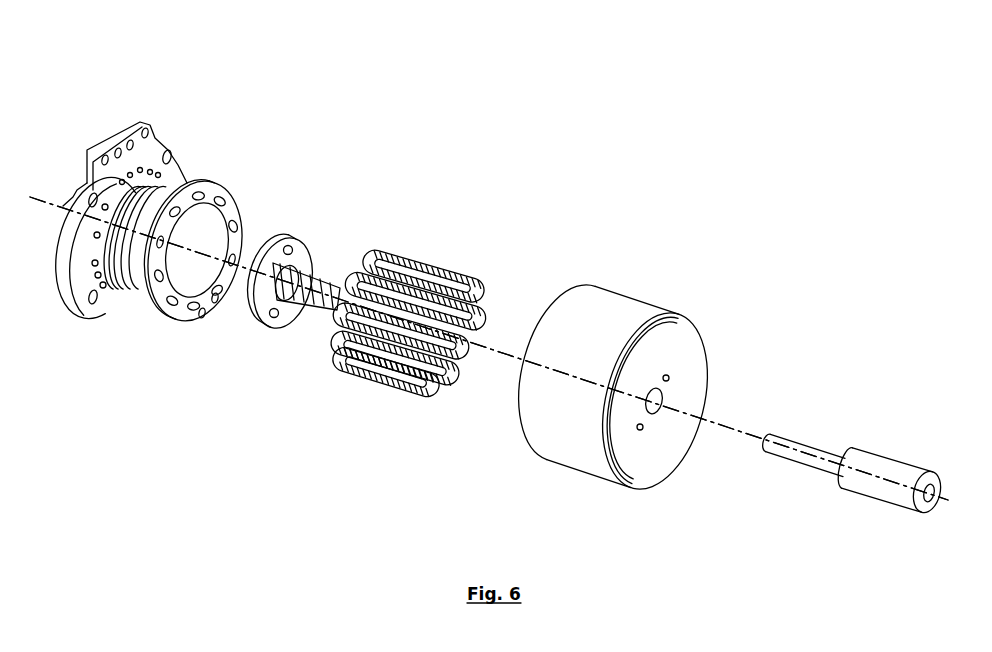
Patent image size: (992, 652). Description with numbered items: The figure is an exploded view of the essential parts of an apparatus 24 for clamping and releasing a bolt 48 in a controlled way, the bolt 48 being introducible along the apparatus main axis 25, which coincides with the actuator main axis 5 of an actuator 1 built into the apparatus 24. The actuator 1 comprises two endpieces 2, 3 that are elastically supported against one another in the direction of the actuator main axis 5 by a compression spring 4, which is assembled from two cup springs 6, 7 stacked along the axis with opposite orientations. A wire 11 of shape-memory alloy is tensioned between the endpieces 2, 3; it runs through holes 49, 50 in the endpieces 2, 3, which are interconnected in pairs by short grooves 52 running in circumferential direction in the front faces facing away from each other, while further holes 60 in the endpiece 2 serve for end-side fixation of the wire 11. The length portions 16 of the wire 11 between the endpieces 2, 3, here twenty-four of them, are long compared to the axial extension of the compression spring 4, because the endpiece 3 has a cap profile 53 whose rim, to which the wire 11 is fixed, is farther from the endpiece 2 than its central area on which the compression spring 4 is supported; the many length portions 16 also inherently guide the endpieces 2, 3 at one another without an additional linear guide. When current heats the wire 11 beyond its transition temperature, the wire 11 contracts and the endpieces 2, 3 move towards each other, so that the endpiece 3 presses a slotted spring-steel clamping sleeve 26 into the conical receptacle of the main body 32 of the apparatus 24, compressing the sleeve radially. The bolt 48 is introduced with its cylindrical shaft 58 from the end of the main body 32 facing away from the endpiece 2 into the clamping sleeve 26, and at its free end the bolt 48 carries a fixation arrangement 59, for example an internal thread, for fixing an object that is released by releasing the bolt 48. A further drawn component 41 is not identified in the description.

The actuator 1 is at (366, 246).
The endpiece 2 is at (58, 231).
The endpiece 3 is at (181, 325).
The compression spring 4 is at (118, 196).
The actuator main axis 5 is at (42, 197).
The apparatus main axis 25 is at (42, 197).
The cup spring 6 is at (105, 243).
The cup spring 7 is at (117, 280).
The holes 49 is at (95, 263).
The further holes 60 is at (107, 163).
The cap profile 53 is at (173, 183).
The short grooves 52 is at (233, 205).
The holes 50 is at (215, 298).
The flange 41 is at (267, 308).
The clamping sleeve 26 is at (302, 312).
The wire 11 is at (466, 267).
The length portions 16 is at (388, 360).
The apparatus 24 is at (590, 172).
The main body 32 is at (655, 302).
The cylindrical shaft 58 is at (792, 458).
The bolt 48 is at (892, 456).
The fixation arrangement 59 is at (924, 513).